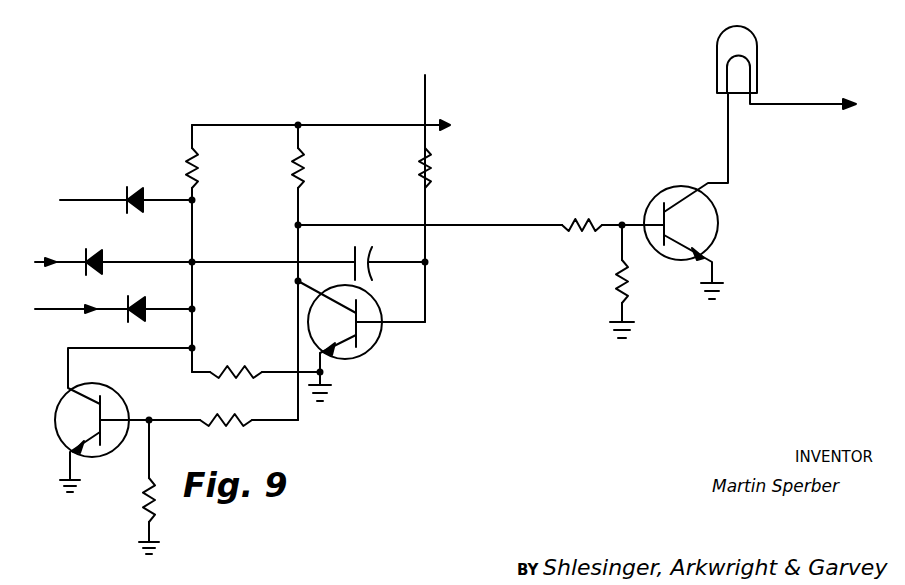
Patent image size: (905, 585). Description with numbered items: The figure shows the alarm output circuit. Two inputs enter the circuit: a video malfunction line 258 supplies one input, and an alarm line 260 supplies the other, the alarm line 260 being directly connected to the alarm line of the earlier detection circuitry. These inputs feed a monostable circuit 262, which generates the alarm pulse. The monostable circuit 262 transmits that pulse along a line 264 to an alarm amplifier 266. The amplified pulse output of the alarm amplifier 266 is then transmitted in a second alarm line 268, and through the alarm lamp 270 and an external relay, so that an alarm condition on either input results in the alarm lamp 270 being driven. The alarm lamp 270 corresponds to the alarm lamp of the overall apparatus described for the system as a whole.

The video malfunction line 258 is at (75, 310).
The alarm line 260 is at (38, 262).
The monostable circuit 262 is at (108, 110).
The line 264 is at (507, 226).
The alarm amplifier 266 is at (662, 188).
The alarm line 268 is at (820, 106).
The alarm lamp 270 is at (760, 44).